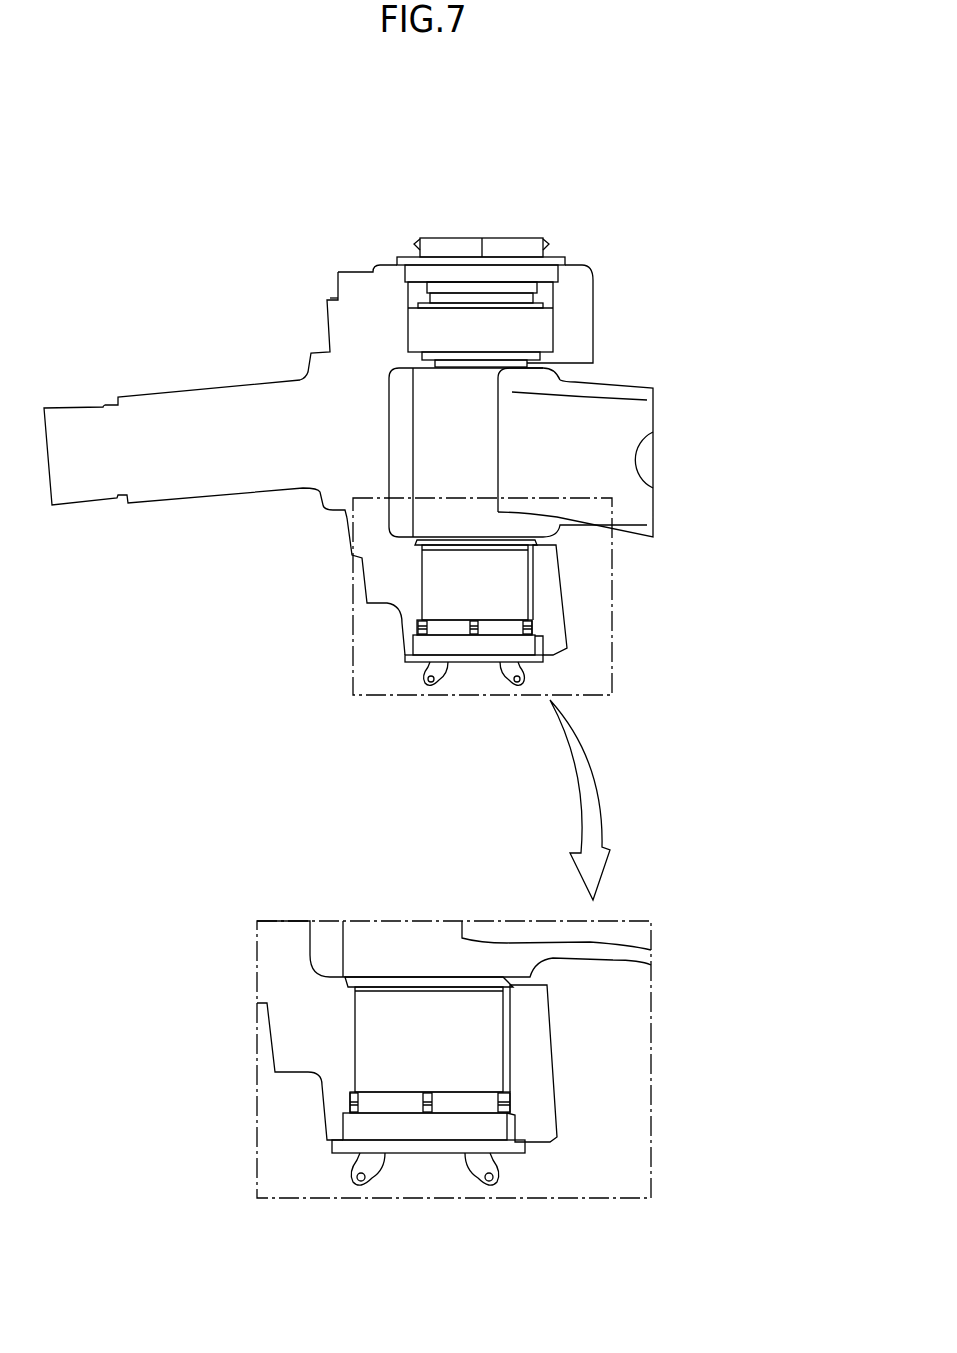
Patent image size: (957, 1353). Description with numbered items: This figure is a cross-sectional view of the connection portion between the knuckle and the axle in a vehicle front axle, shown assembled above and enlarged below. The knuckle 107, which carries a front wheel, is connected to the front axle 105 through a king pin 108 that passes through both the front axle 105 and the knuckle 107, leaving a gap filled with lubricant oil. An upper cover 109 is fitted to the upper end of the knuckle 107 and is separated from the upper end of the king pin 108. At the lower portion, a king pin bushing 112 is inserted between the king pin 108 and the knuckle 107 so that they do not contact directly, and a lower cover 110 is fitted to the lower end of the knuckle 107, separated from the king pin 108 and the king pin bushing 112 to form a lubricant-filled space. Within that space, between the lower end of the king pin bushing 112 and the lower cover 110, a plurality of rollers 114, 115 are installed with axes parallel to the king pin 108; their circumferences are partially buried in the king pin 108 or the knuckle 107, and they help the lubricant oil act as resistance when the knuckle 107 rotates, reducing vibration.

The front axle 105 is at (592, 417).
The knuckle 107 is at (218, 425).
The king pin 108 is at (409, 1107).
The upper cover 109 is at (515, 248).
The lower cover 110 is at (483, 647).
The king pin bushing 112 is at (510, 592).
The roller 114 is at (430, 1110).
The roller 115 is at (353, 1098).